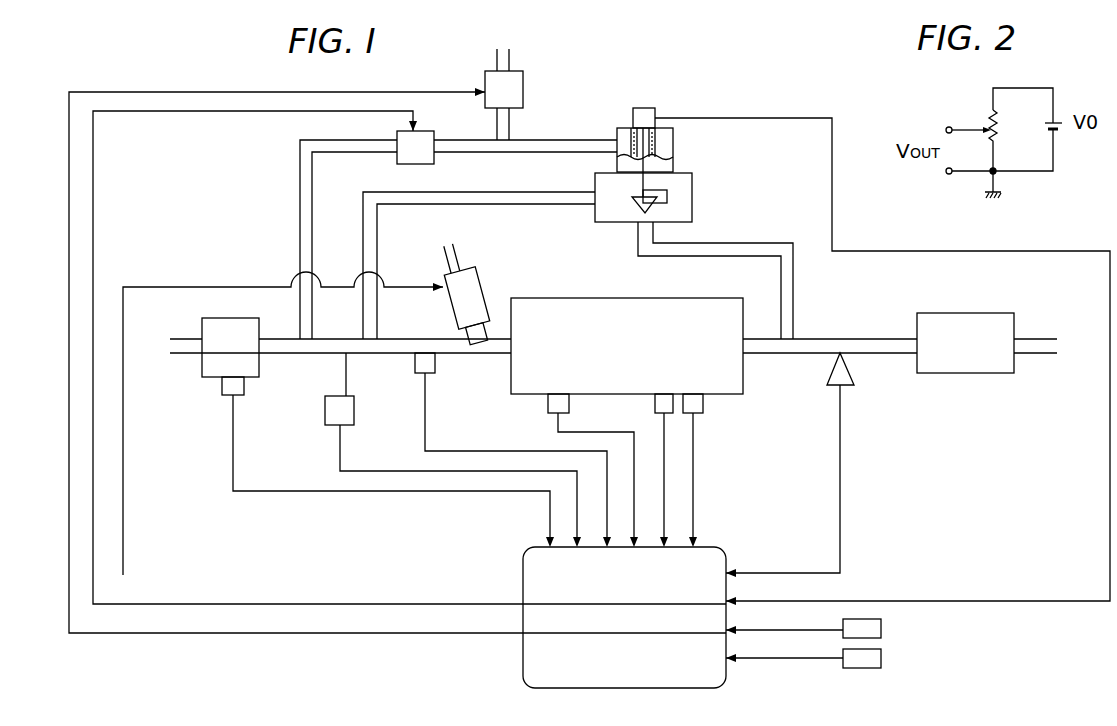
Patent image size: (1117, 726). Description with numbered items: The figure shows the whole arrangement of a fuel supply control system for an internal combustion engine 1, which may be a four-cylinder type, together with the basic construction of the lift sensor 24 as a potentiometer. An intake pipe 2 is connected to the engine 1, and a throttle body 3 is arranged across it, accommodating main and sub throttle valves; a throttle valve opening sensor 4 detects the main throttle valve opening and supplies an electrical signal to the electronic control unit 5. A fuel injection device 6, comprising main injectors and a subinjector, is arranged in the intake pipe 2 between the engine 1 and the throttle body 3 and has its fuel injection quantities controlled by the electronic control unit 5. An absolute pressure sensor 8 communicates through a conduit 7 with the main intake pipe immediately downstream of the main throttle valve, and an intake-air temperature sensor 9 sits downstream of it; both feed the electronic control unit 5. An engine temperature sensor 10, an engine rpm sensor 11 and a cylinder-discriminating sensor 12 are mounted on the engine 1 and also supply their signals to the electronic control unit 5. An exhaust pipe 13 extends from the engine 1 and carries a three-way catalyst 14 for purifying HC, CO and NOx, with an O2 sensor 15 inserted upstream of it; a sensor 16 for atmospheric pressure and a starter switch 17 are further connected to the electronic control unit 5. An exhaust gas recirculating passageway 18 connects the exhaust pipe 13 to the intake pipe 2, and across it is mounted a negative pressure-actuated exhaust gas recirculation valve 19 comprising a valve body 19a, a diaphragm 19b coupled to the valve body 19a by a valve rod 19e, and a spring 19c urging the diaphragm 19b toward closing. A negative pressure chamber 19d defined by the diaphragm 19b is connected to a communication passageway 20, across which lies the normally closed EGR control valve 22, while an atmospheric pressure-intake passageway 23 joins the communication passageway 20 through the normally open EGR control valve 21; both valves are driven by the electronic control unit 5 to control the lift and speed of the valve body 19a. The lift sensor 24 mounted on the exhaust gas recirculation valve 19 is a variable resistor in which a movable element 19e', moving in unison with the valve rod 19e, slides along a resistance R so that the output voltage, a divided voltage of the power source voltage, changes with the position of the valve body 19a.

In FIG. 1, the internal combustion engine 1 is at (667, 306).
In FIG. 1, the intake pipe 2 is at (456, 356).
In FIG. 1, the throttle body 3 is at (259, 363).
In FIG. 1, the throttle valve opening sensor 4 is at (244, 387).
In FIG. 1, the electronic control unit 5 is at (710, 552).
In FIG. 1, the fuel injection device 6 is at (484, 284).
In FIG. 1, the conduit 7 is at (346, 386).
In FIG. 1, the absolute pressure sensor 8 is at (354, 413).
In FIG. 1, the intake-air temperature sensor 9 is at (421, 375).
In FIG. 1, the engine temperature sensor 10 is at (569, 400).
In FIG. 1, the engine rpm sensor 11 is at (655, 404).
In FIG. 1, the cylinder-discriminating sensor 12 is at (703, 406).
In FIG. 1, the exhaust pipe 13 is at (876, 339).
In FIG. 1, the three-way catalyst 14 is at (958, 313).
In FIG. 1, the O2 sensor 15 is at (852, 372).
In FIG. 1, the atmospheric pressure sensor 16 is at (881, 629).
In FIG. 1, the starter switch 17 is at (881, 658).
In FIG. 1, the exhaust gas recirculating passageway 18 is at (522, 191).
In FIG. 1, the exhaust gas recirculation valve 19 is at (673, 146).
In FIG. 1, the valve body 19a is at (667, 198).
In FIG. 1, the diaphragm 19b is at (673, 152).
In FIG. 1, the spring 19c is at (657, 137).
In FIG. 1, the negative pressure chamber 19d is at (668, 137).
In FIG. 1, the valve rod 19e is at (691, 193).
In FIG. 2, the movable element 19e' is at (964, 108).
In FIG. 1, the communication passageway 20 is at (572, 138).
In FIG. 1, the EGR control valve 21 is at (523, 84).
In FIG. 1, the EGR control valve 22 is at (434, 137).
In FIG. 1, the atmospheric pressure-intake passageway 23 is at (512, 123).
In FIG. 1, the lift sensor 24 is at (648, 108).
In FIG. 2, the resistance R is at (998, 116).